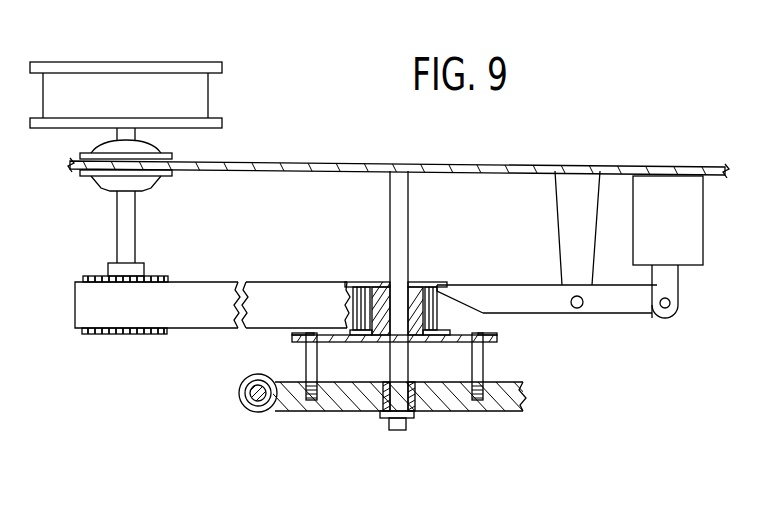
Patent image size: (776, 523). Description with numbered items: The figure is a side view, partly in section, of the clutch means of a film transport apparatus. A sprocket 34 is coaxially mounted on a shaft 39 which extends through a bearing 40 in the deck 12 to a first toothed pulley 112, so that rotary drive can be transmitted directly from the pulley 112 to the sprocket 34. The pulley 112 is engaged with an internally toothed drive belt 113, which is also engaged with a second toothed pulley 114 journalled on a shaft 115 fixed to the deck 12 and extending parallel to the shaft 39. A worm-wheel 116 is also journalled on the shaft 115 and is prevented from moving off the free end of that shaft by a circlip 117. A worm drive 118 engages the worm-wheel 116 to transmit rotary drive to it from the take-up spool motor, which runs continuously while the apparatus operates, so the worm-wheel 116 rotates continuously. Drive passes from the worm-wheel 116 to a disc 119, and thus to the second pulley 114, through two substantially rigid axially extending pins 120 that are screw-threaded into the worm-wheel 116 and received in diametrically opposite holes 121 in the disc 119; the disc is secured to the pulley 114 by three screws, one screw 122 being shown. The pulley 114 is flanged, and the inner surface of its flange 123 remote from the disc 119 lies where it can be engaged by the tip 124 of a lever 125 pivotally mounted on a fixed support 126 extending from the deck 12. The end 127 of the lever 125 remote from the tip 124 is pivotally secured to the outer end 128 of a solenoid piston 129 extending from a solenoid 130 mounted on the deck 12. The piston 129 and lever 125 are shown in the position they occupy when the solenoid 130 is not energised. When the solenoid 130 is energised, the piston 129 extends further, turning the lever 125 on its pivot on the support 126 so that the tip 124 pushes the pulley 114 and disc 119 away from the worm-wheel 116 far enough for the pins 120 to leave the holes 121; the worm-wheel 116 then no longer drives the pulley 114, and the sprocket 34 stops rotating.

The deck 12 is at (285, 161).
The sprocket 34 is at (74, 61).
The bearing 40 is at (98, 143).
The shaft 39 is at (117, 210).
The first toothed pulley 112 is at (101, 272).
The internally toothed drive belt 113 is at (183, 311).
The second toothed pulley 114 is at (356, 281).
The shaft 115 is at (389, 207).
The worm-wheel 116 is at (498, 412).
The circlip 117 is at (412, 416).
The worm drive 118 is at (238, 397).
The disc 119 is at (497, 339).
The axially extending pins 120 is at (306, 372).
The holes 121 is at (300, 342).
The screw 122 is at (410, 346).
The flange 123 is at (446, 285).
The tip 124 is at (456, 292).
The lever 125 is at (627, 300).
The fixed support 126 is at (563, 204).
The end of the lever 127 is at (654, 316).
The outer end of the solenoid piston 128 is at (672, 310).
The solenoid piston 129 is at (678, 282).
The solenoid 130 is at (683, 215).